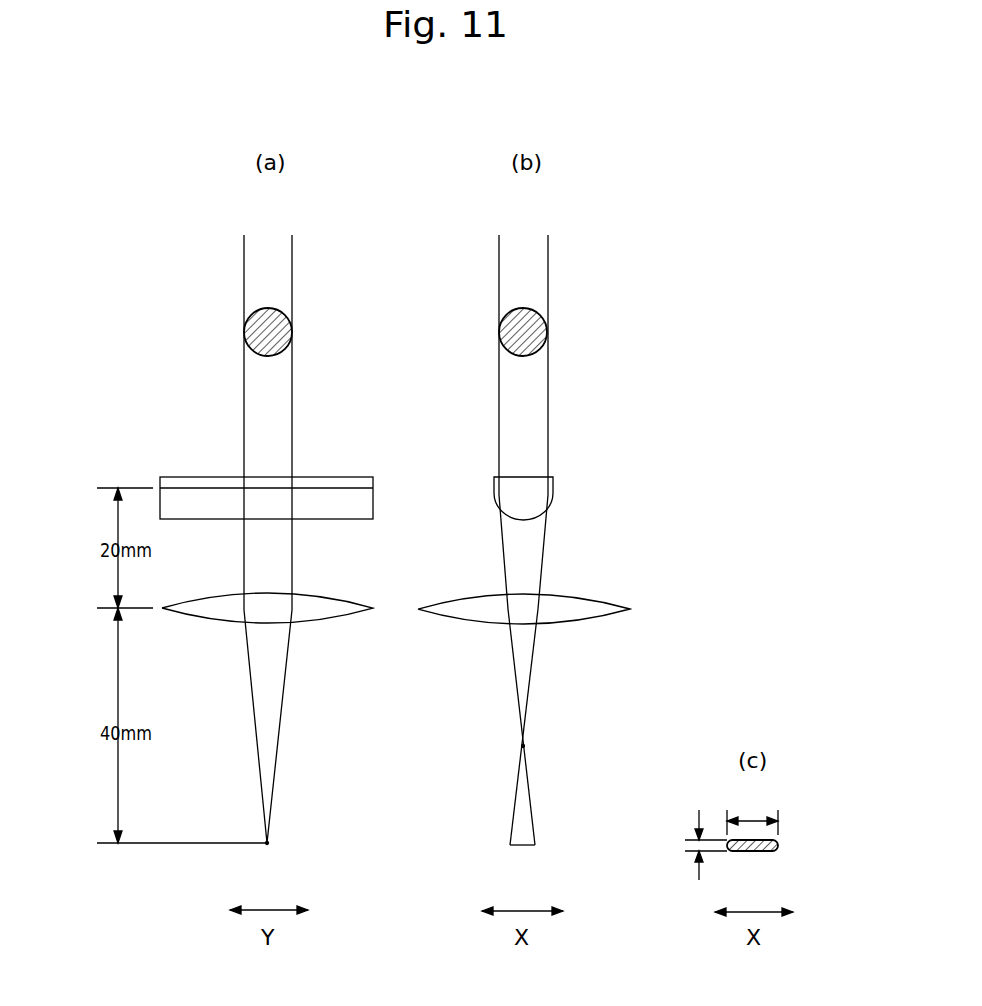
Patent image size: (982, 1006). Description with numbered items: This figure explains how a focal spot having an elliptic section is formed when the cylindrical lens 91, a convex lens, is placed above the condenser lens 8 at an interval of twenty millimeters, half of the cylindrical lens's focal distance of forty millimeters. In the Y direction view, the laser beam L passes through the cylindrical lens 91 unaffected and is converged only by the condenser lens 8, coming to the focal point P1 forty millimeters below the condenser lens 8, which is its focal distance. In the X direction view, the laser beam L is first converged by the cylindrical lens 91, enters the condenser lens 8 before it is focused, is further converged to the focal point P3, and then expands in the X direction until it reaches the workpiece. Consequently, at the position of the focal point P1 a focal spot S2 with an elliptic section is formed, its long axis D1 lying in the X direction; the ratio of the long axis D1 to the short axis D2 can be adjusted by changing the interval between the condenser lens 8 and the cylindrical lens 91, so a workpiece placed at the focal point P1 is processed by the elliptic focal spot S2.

The laser beam L is at (292, 272).
The cylindrical lens 91 is at (354, 478).
The condenser lens 8 is at (356, 596).
The focal point P1 is at (268, 843).
The focal point P3 is at (523, 746).
The focal spot S2 is at (770, 840).
The long axis D1 is at (752, 812).
The short axis D2 is at (692, 845).